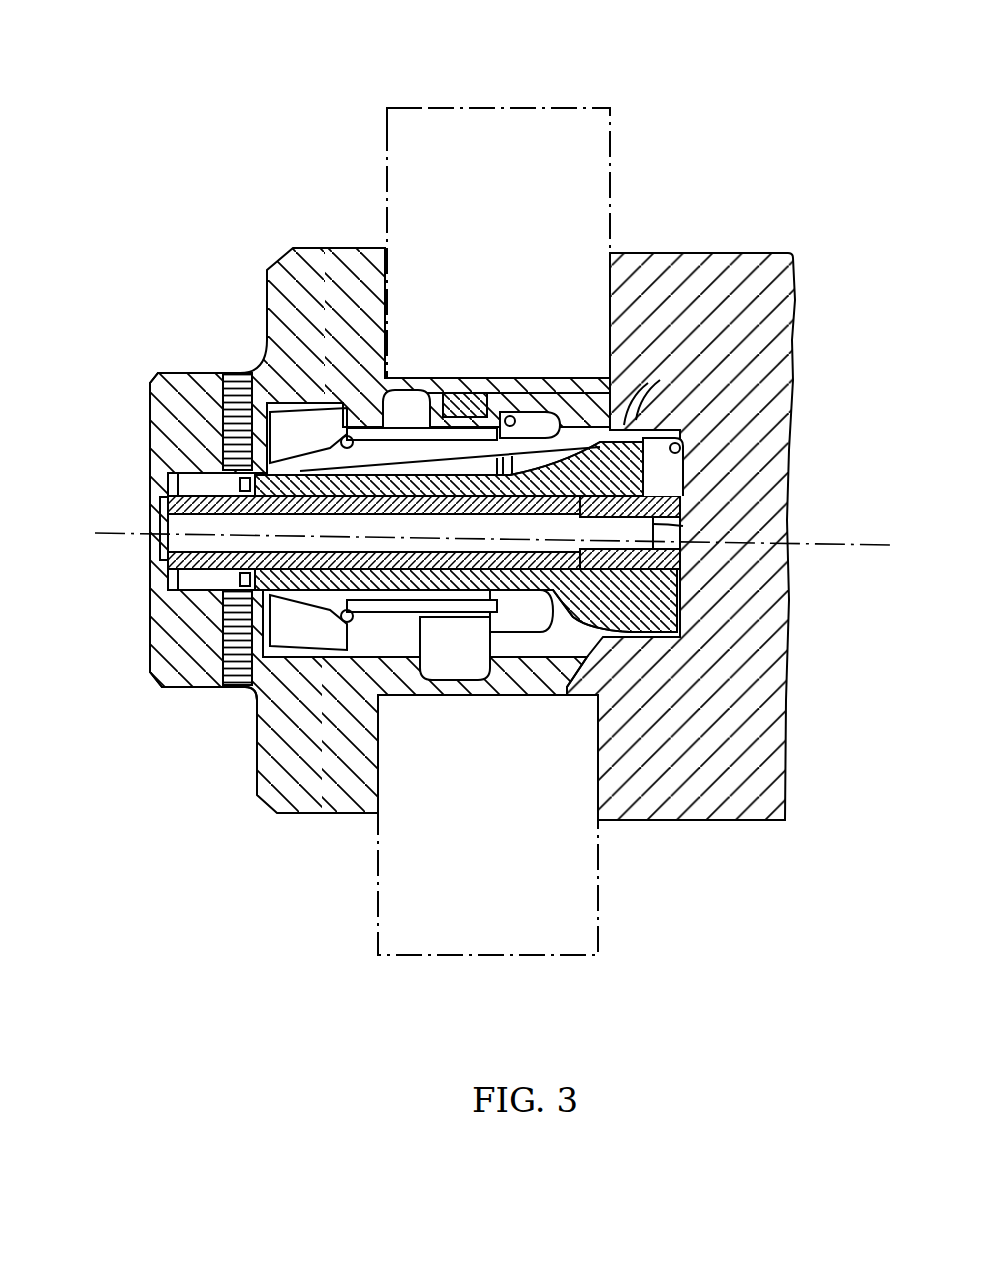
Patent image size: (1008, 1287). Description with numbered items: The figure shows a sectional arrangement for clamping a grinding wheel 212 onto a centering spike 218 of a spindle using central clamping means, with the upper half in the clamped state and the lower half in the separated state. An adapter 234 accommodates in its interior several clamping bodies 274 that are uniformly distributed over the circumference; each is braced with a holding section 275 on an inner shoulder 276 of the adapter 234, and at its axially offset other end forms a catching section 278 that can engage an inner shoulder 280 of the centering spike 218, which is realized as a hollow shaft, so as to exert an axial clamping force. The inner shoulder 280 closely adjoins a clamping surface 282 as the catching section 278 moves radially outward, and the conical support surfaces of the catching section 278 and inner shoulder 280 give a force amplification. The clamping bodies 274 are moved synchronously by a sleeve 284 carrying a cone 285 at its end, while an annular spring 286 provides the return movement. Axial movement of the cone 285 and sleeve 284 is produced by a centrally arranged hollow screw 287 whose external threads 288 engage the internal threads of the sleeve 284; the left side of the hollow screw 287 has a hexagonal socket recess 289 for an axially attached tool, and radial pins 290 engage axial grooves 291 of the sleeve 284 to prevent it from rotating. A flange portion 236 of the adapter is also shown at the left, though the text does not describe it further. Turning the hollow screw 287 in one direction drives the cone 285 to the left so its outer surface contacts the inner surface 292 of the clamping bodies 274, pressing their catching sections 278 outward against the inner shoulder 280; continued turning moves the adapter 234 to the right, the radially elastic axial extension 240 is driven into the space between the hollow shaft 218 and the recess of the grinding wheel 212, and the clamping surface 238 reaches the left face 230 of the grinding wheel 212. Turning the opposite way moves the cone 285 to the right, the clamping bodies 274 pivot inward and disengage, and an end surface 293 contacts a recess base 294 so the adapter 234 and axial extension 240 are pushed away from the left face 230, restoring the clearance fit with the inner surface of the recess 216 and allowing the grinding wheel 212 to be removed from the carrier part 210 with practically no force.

The carrier part 210 is at (725, 783).
The grinding wheel 212 is at (547, 126).
The recess 216 is at (547, 690).
The centering spike 218 is at (450, 660).
The left face 230 is at (387, 108).
The adapter 234 is at (147, 683).
The mounting flange 236 is at (288, 773).
The clamping surface 238 is at (393, 262).
The radially elastic axial extension 240 is at (496, 388).
The clamping bodies 274 is at (402, 447).
The holding section 275 is at (303, 403).
The inner shoulder 276 is at (317, 420).
The catching section 278 is at (547, 430).
The inner shoulder 280 is at (520, 425).
The clamping surface 282 is at (478, 625).
The sleeve 284 is at (460, 480).
The cone 285 is at (683, 431).
The annular spring 286 is at (343, 622).
The hollow screw 287 is at (683, 523).
The external threads 288 is at (260, 698).
The hexagonal socket recess 289 is at (172, 533).
The radial pins 290 is at (222, 412).
The axial grooves 291 is at (210, 476).
The inner surface 292 is at (627, 410).
The end surface 293 is at (680, 472).
The recess base 294 is at (690, 437).